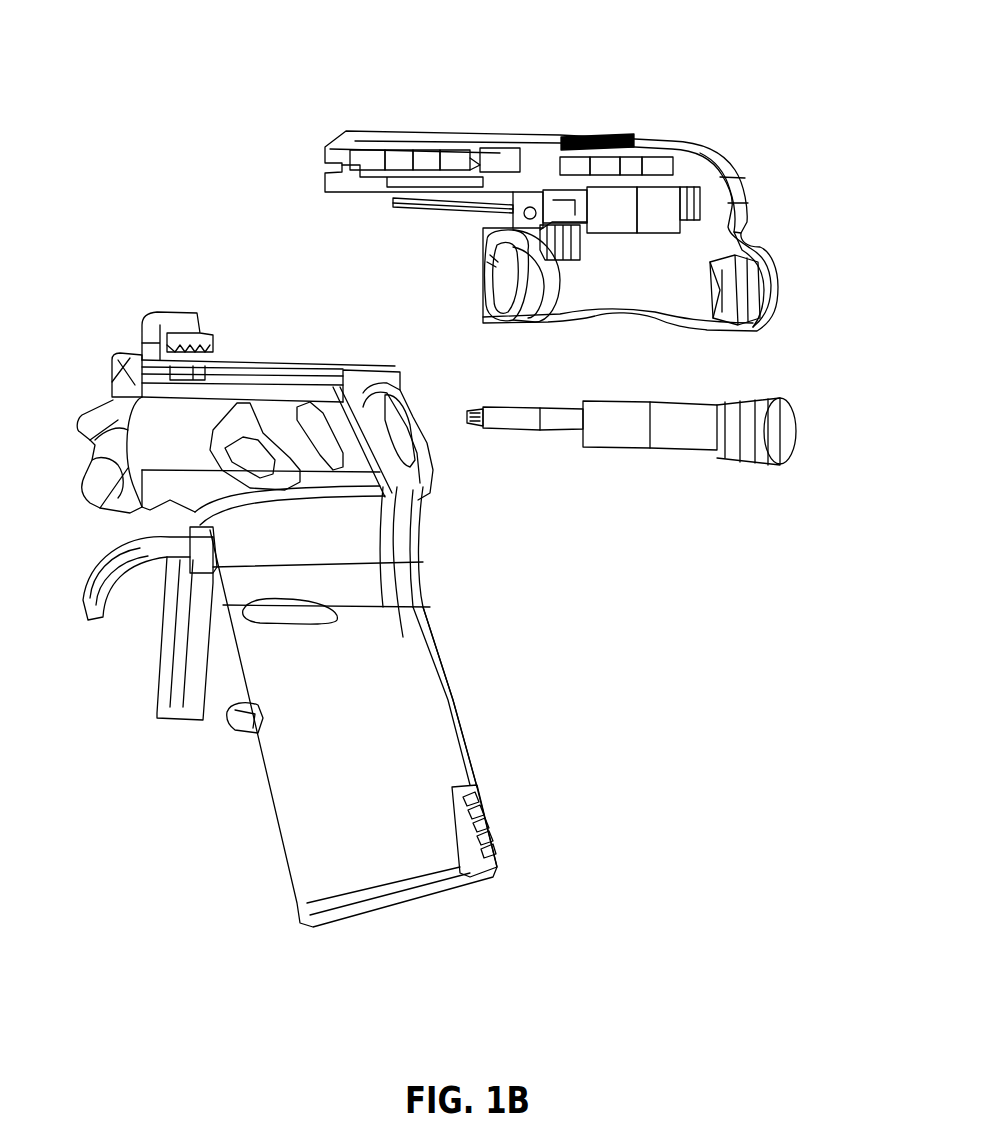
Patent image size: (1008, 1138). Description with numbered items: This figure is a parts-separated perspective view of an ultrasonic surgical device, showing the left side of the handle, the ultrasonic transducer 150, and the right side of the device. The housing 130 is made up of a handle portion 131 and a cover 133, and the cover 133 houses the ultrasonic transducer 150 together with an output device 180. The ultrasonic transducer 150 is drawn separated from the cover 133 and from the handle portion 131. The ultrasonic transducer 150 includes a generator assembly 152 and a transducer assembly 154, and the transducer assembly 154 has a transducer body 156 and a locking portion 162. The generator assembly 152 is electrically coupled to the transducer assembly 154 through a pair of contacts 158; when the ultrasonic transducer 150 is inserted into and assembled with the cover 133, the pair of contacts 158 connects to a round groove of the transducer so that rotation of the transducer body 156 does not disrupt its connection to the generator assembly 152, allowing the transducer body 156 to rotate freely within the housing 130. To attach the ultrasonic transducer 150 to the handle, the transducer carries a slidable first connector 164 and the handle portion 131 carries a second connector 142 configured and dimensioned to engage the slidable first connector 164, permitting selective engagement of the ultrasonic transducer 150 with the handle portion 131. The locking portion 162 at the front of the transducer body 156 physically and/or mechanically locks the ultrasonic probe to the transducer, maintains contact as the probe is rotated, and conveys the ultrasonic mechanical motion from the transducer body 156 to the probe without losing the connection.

The housing 130 is at (465, 624).
The handle portion 131 is at (457, 711).
The cover 133 is at (750, 195).
The second connector 142 is at (252, 338).
The ultrasonic transducer 150 is at (551, 231).
The generator assembly 152 is at (507, 146).
The transducer assembly 154 is at (649, 472).
The transducer body 156 is at (738, 452).
The pair of contacts 158 is at (586, 252).
The locking portion 162 is at (471, 432).
The slidable first connector 164 is at (418, 212).
The output device 180 is at (614, 128).